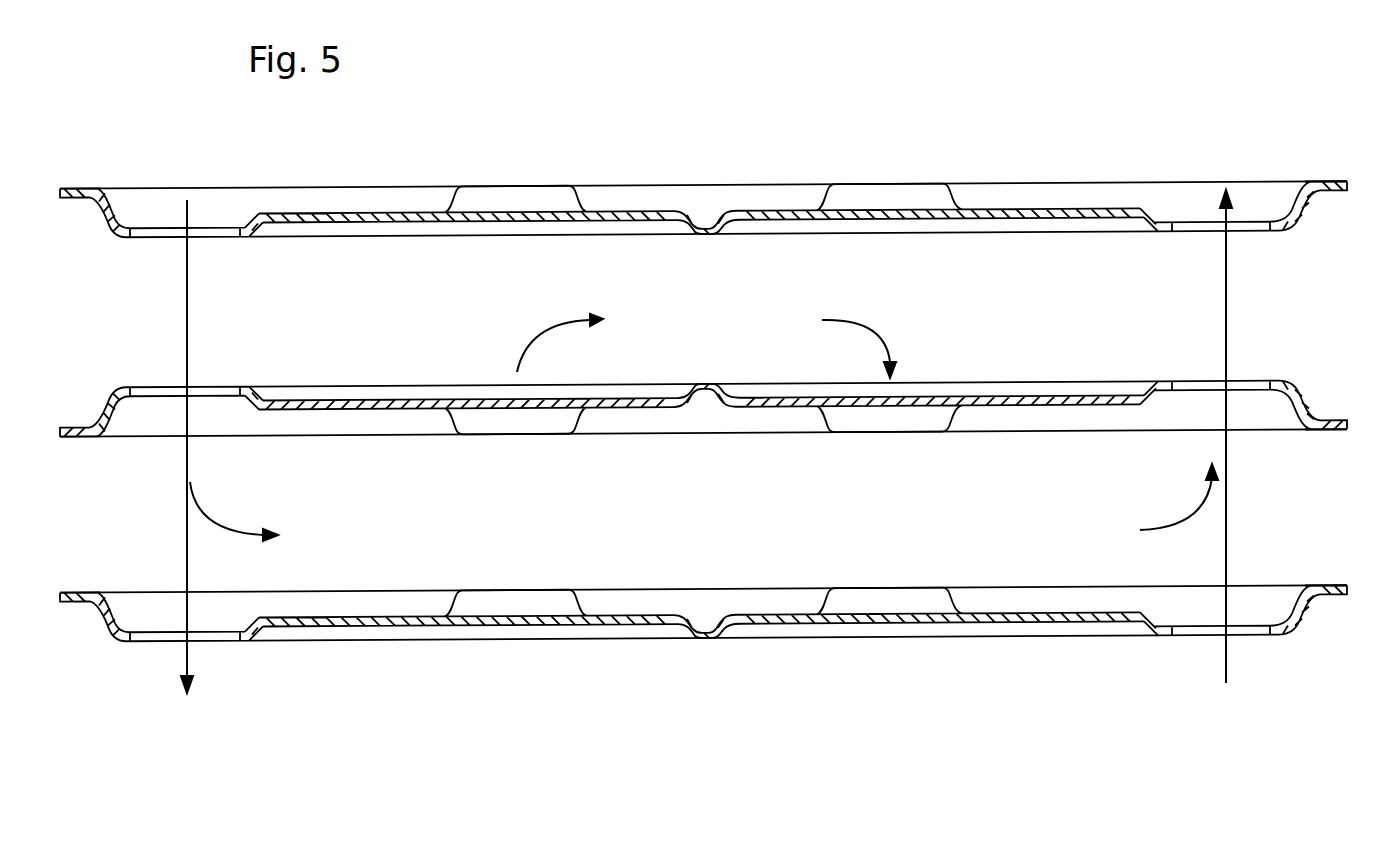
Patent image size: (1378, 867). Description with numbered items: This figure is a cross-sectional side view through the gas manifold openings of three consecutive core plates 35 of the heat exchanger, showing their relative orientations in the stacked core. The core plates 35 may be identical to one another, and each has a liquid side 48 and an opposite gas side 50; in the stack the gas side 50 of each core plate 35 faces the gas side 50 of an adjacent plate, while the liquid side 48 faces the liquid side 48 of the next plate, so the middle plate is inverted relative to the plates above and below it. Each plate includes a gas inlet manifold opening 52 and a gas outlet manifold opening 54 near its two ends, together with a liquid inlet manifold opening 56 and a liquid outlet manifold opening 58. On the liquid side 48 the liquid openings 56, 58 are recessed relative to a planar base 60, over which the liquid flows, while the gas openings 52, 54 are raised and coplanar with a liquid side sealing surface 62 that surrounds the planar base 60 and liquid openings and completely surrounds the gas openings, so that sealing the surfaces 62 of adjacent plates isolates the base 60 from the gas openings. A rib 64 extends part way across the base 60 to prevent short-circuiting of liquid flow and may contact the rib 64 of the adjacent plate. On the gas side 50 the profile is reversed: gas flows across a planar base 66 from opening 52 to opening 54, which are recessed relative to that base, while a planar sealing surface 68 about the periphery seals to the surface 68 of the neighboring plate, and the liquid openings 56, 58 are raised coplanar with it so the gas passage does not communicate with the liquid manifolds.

The core plate 35 is at (87, 222).
The liquid side 48 is at (372, 390).
The gas side 50 is at (359, 213).
The gas inlet manifold opening 52 is at (157, 232).
The gas outlet manifold opening 54 is at (1252, 385).
The liquid inlet manifold opening 56 is at (511, 187).
The liquid outlet manifold opening 58 is at (878, 184).
The planar base 60 is at (421, 395).
The liquid side sealing surface 62 is at (992, 383).
The rib 64 is at (703, 385).
The planar base 66 is at (641, 212).
The planar sealing surface 68 is at (1324, 182).